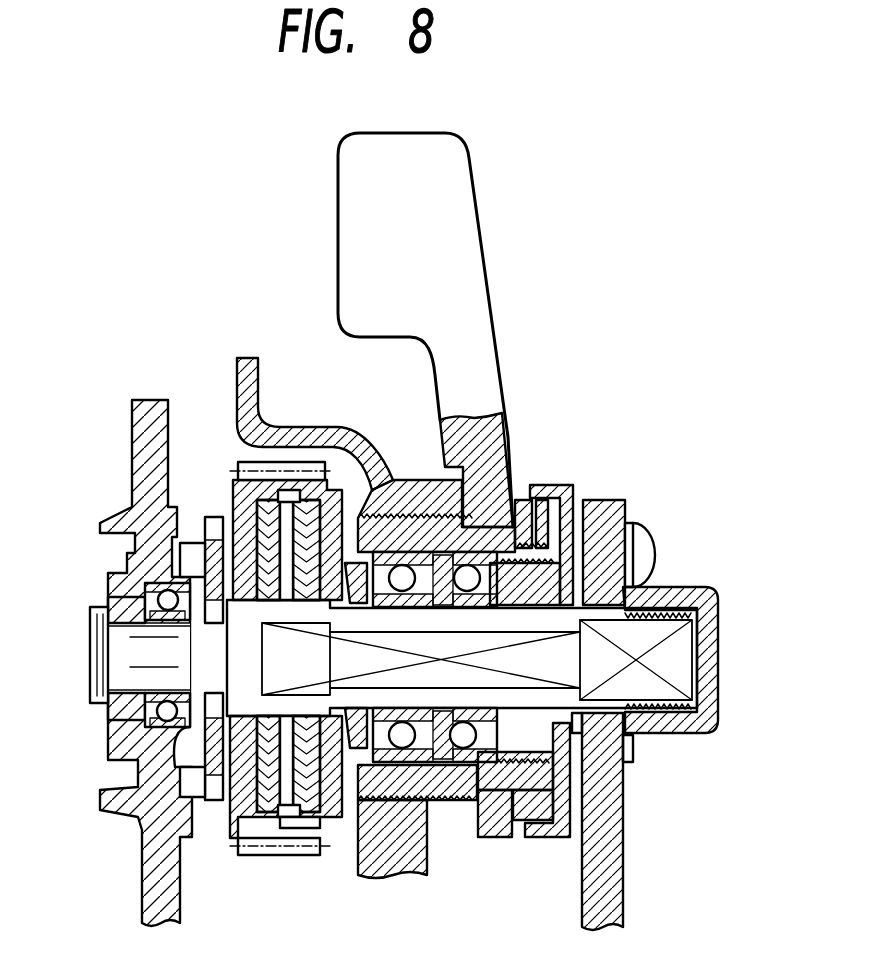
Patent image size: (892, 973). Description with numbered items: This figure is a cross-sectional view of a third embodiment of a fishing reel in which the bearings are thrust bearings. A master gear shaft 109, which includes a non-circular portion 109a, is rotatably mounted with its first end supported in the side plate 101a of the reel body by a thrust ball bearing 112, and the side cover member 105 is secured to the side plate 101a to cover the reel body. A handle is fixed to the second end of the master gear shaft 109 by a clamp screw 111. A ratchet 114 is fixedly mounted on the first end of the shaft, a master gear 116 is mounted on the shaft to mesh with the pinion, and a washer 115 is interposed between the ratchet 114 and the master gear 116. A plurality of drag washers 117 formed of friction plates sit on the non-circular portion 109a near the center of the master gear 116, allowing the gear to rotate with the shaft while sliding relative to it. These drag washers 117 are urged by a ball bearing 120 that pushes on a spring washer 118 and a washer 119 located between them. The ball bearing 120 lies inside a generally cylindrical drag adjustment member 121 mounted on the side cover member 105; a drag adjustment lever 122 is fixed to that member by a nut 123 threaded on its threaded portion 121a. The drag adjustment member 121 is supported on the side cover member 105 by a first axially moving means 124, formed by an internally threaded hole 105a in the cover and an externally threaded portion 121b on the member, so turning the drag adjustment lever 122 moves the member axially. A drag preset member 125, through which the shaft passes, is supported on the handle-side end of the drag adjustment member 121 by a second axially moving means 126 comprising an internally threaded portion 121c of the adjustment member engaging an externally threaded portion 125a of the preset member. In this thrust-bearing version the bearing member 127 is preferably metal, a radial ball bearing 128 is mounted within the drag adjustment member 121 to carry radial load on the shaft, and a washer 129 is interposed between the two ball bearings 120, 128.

The side plate 101a is at (132, 440).
The side cover member 105 is at (243, 355).
The internally threaded hole 105a is at (448, 805).
The master gear shaft 109 is at (685, 658).
The non-circular portion 109a is at (337, 818).
The clamp screw 111 is at (718, 600).
The bearing 112 is at (150, 719).
The ratchet 114 is at (213, 517).
The washer 115 is at (140, 825).
The master gear 116 is at (250, 858).
The drag washers 117 is at (300, 540).
The spring washer 118 is at (350, 565).
The washer 119 is at (440, 527).
The ball bearing 120 is at (522, 499).
The drag adjustment member 121 is at (623, 867).
The threaded portion 121a is at (573, 517).
The externally threaded portion 121b is at (470, 832).
The internally threaded portion 121c is at (622, 750).
The drag adjustment lever 122 is at (472, 185).
The nut 123 is at (532, 492).
The first axially moving means 124 is at (405, 790).
The drag preset member 125 is at (592, 508).
The externally threaded portion 125a is at (493, 780).
The second axially moving means 126 is at (553, 807).
The bearing member 127 is at (115, 606).
The radial ball bearing 128 is at (393, 757).
The washer 129 is at (466, 430).